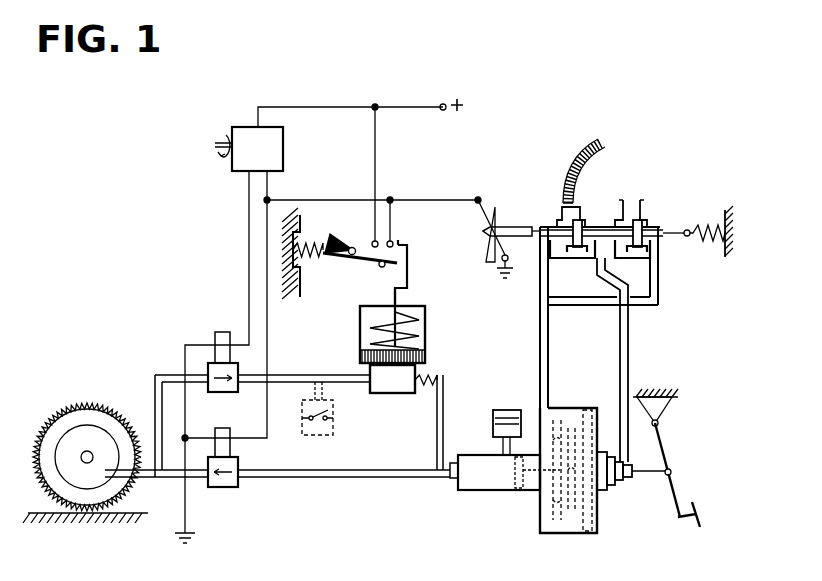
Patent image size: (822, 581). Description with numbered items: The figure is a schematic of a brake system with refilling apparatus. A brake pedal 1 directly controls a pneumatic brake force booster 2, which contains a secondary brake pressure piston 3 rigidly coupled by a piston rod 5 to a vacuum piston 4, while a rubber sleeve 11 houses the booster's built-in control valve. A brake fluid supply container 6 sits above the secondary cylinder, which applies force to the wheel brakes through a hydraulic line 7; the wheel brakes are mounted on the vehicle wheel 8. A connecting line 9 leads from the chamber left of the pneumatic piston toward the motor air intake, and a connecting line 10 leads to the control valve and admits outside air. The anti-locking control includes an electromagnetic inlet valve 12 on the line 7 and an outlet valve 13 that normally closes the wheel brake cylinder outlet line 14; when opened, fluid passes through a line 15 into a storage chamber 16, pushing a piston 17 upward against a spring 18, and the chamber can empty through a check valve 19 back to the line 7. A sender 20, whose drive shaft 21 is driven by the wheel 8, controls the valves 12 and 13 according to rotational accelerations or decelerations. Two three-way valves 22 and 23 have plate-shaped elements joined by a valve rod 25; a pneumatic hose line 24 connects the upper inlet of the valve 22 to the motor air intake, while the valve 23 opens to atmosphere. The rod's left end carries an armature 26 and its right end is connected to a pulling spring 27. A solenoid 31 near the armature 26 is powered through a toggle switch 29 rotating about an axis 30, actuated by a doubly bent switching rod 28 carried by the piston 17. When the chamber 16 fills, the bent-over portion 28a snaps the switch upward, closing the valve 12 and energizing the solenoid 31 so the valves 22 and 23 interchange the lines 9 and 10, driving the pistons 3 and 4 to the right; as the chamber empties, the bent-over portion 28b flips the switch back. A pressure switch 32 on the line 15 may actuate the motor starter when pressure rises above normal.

The brake pedal 1 is at (672, 456).
The pneumatic brake force booster 2 is at (534, 528).
The secondary brake pressure piston 3 is at (510, 483).
The vacuum piston 4 is at (592, 524).
The piston rod 5 is at (556, 472).
The brake fluid supply container 6 is at (493, 421).
The hydraulic line 7 is at (350, 478).
The vehicle wheel 8 is at (80, 410).
The connecting line 9 is at (550, 347).
The connecting line 10 is at (628, 357).
The rubber sleeve 11 is at (627, 484).
The inlet valve 12 is at (239, 484).
The outlet valve 13 is at (232, 393).
The wheel brake cylinder outlet line 14 is at (158, 375).
The line 15 is at (292, 375).
The storage chamber 16 is at (390, 386).
The storage chamber piston 17 is at (360, 356).
The spring 18 is at (410, 323).
The check valve 19 is at (440, 376).
The sender 20 is at (272, 155).
The drive shaft 21 is at (216, 143).
The three-way valve 22 is at (552, 218).
The three-way valve 23 is at (640, 210).
The pneumatic hose line 24 is at (570, 160).
The valve rod 25 is at (592, 232).
The armature 26 is at (485, 245).
The pulling spring 27 is at (705, 248).
The switching rod 28 is at (408, 272).
The bent-over portion 28a is at (396, 289).
The bent-over portion 28b is at (405, 245).
The toggle switch 29 is at (342, 262).
The axis 30 is at (352, 247).
The solenoid 31 is at (488, 208).
The pressure switch 32 is at (333, 427).